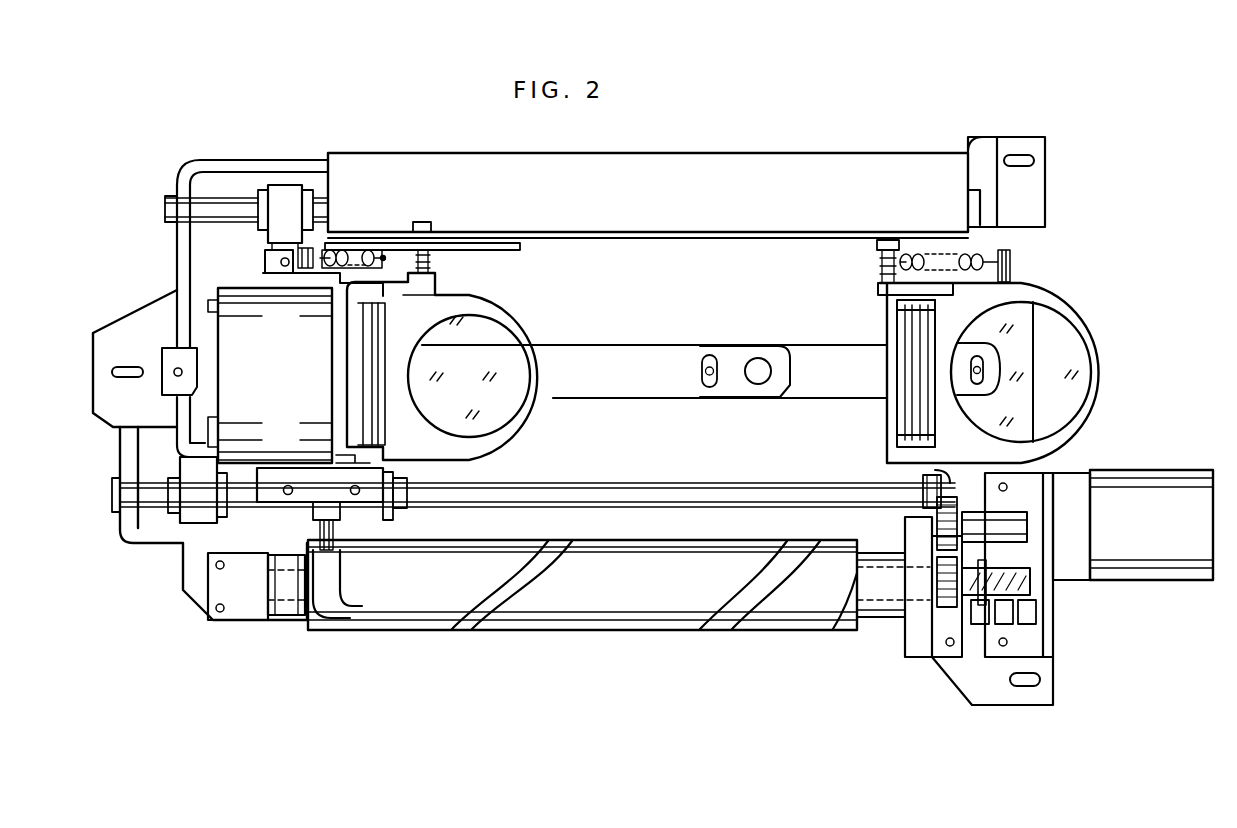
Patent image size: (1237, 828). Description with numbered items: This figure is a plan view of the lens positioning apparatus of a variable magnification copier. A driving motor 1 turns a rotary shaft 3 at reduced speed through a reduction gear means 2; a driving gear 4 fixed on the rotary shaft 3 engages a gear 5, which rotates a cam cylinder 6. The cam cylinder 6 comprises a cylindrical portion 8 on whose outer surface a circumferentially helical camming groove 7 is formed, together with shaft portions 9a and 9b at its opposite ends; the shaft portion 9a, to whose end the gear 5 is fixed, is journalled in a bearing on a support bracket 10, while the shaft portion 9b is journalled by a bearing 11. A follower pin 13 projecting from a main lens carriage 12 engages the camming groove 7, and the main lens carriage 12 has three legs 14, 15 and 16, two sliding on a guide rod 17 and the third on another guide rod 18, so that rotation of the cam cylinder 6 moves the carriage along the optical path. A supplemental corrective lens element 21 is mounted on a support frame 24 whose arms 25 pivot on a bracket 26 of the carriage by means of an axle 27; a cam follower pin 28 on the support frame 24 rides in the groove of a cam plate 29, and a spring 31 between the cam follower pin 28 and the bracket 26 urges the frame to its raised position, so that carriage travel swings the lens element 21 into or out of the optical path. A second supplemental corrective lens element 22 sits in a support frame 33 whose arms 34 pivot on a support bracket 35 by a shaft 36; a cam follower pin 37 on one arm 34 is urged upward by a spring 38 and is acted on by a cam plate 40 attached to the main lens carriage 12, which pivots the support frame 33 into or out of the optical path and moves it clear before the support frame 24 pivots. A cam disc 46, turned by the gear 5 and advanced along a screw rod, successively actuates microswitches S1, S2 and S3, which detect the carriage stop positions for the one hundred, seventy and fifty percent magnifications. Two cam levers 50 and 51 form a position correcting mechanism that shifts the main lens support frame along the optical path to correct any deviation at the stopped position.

The driving motor 1 is at (1190, 470).
The reduction gear means 2 is at (1075, 567).
The rotary shaft 3 is at (1020, 522).
The driving gear 4 is at (887, 466).
The gear 5 is at (932, 660).
The cam cylinder 6 is at (582, 614).
The camming groove 7 is at (740, 608).
The cylindrical portion 8 is at (440, 622).
The shaft portion 9a is at (872, 600).
The shaft portion 9b is at (290, 616).
The support bracket 10 is at (905, 533).
The bearing 11 is at (258, 620).
The main lens carriage 12 is at (237, 300).
The follower pin 13 is at (328, 540).
The leg 14 is at (200, 518).
The leg 15 is at (370, 522).
The leg 16 is at (287, 188).
The guide rod 17 is at (640, 500).
The guide rod 18 is at (218, 205).
The supplemental corrective lens element 21 is at (505, 352).
The supplemental corrective lens element 22 is at (1060, 330).
The support frame 24 is at (528, 428).
The arms 25 is at (355, 455).
The bracket 26 is at (300, 283).
The axle 27 is at (365, 370).
The cam follower pin 28 is at (426, 232).
The cam plate 29 is at (632, 232).
The spring 31 is at (357, 255).
The support frame 33 is at (1110, 353).
The arms 34 is at (883, 292).
The support bracket 35 is at (905, 438).
The shaft 36 is at (905, 365).
The cam follower pin 37 is at (878, 245).
The spring 38 is at (935, 258).
The cam plate 40 is at (508, 243).
The cam disc 46 is at (985, 565).
The cam lever 50 is at (655, 360).
The cam lever 51 is at (800, 355).
The microswitch S1 is at (985, 625).
The microswitch S2 is at (1012, 630).
The microswitch S3 is at (1038, 618).